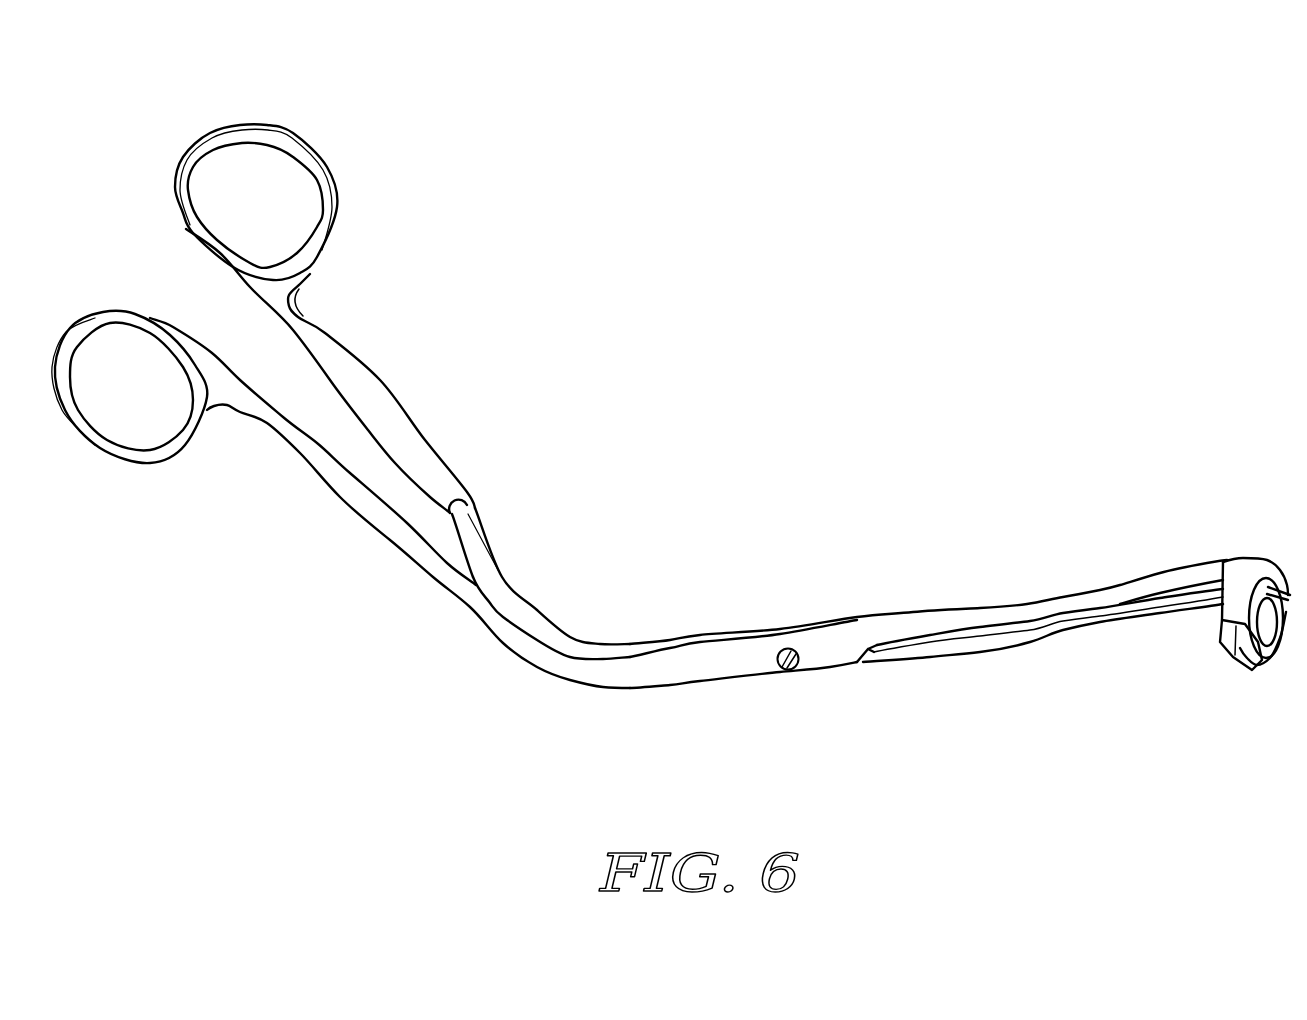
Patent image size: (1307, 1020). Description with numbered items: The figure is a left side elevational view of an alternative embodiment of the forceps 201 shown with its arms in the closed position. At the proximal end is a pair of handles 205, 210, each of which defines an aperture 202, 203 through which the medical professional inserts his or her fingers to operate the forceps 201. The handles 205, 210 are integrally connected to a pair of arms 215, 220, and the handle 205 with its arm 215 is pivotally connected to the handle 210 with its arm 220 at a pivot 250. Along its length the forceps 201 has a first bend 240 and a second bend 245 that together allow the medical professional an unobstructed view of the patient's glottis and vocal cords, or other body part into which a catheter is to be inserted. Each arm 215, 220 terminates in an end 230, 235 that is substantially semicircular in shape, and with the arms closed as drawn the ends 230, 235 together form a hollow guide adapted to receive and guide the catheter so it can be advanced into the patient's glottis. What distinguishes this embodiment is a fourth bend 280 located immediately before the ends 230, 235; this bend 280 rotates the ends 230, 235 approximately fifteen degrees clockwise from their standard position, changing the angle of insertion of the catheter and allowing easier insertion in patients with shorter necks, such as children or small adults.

The forceps 201 is at (760, 228).
The aperture 202 is at (240, 180).
The handle 205 is at (290, 143).
The handle 210 is at (107, 313).
The aperture 203 is at (120, 393).
The first bend 240 is at (467, 527).
The second bend 245 is at (582, 668).
The arm 220 is at (1025, 617).
The pivot 250 is at (782, 650).
The arm 215 is at (900, 657).
The end 235 is at (1272, 562).
The fourth bend 280 is at (1235, 560).
The end 230 is at (1254, 670).